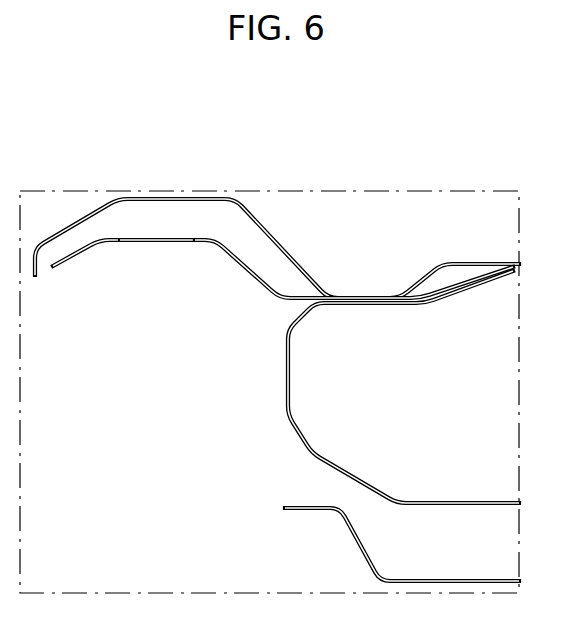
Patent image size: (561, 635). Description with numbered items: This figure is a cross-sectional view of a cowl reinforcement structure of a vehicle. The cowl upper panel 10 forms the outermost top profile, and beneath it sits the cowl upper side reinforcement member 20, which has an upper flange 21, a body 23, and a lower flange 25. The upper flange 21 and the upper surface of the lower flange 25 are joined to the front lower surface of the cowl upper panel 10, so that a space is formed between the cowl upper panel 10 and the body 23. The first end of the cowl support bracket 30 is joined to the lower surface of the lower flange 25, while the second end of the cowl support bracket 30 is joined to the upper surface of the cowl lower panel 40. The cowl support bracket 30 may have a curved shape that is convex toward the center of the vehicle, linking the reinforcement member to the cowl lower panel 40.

The cowl upper panel 10 is at (175, 196).
The cowl upper side reinforcement member 20 is at (283, 317).
The upper flange 21 is at (72, 257).
The body 23 is at (185, 242).
The lower flange 25 is at (297, 301).
The cowl support bracket 30 is at (289, 375).
The cowl lower panel 40 is at (292, 505).